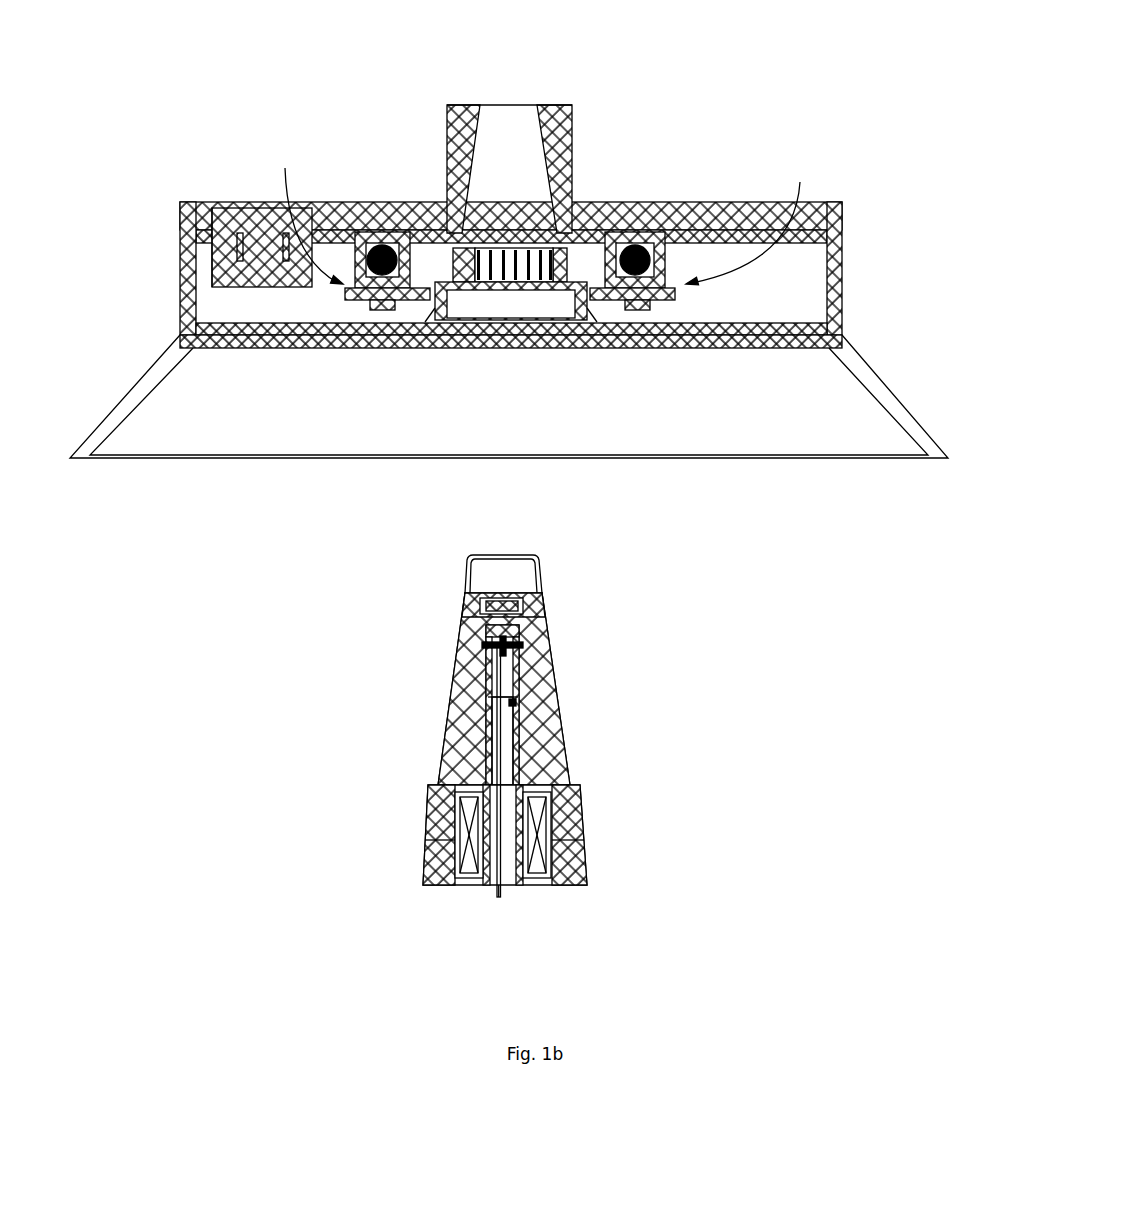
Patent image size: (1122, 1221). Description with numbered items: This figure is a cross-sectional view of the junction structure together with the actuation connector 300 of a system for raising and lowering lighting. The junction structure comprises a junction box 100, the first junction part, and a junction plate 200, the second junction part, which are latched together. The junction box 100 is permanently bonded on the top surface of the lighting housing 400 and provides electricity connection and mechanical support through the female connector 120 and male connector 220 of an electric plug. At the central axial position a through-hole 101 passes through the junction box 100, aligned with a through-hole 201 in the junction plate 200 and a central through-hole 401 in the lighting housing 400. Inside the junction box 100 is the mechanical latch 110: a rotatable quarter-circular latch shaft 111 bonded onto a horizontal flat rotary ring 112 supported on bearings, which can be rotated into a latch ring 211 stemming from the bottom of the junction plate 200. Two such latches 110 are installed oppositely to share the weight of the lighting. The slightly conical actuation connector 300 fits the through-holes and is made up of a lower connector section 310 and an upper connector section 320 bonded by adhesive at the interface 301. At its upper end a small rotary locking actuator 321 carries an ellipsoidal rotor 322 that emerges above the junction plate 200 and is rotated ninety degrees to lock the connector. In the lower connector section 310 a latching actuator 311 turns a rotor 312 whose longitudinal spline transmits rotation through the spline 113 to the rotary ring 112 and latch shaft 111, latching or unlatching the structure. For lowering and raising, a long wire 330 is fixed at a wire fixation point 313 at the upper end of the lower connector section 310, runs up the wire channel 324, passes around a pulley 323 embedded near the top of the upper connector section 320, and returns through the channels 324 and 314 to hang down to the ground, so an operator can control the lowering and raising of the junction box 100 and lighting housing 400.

The junction box 100 is at (838, 300).
The through-hole 101 is at (497, 308).
The mechanical latch 110 is at (541, 216).
The latch shaft 111 is at (635, 245).
The rotary ring 112 is at (667, 303).
The spline 113 is at (530, 265).
The female connector 120 is at (228, 263).
The junction plate 200 is at (822, 218).
The through-hole 201 is at (510, 168).
The latch ring 211 is at (662, 267).
The male connector 220 is at (258, 218).
The actuation connector 300 is at (504, 634).
The interface 301 is at (545, 705).
The lower connector section 310 is at (600, 816).
The latching actuator 311 is at (460, 865).
The rotor 312 is at (438, 820).
The wire fixation point 313 is at (515, 705).
The wire channel 314 is at (498, 720).
The upper connector section 320 is at (568, 653).
The rotary locking actuator 321 is at (485, 607).
The rotor 322 is at (475, 570).
The pulley 323 is at (490, 645).
The wire channel 324 is at (497, 680).
The long wire 330 is at (505, 890).
The lighting housing 400 is at (900, 412).
The central through-hole 401 is at (452, 328).